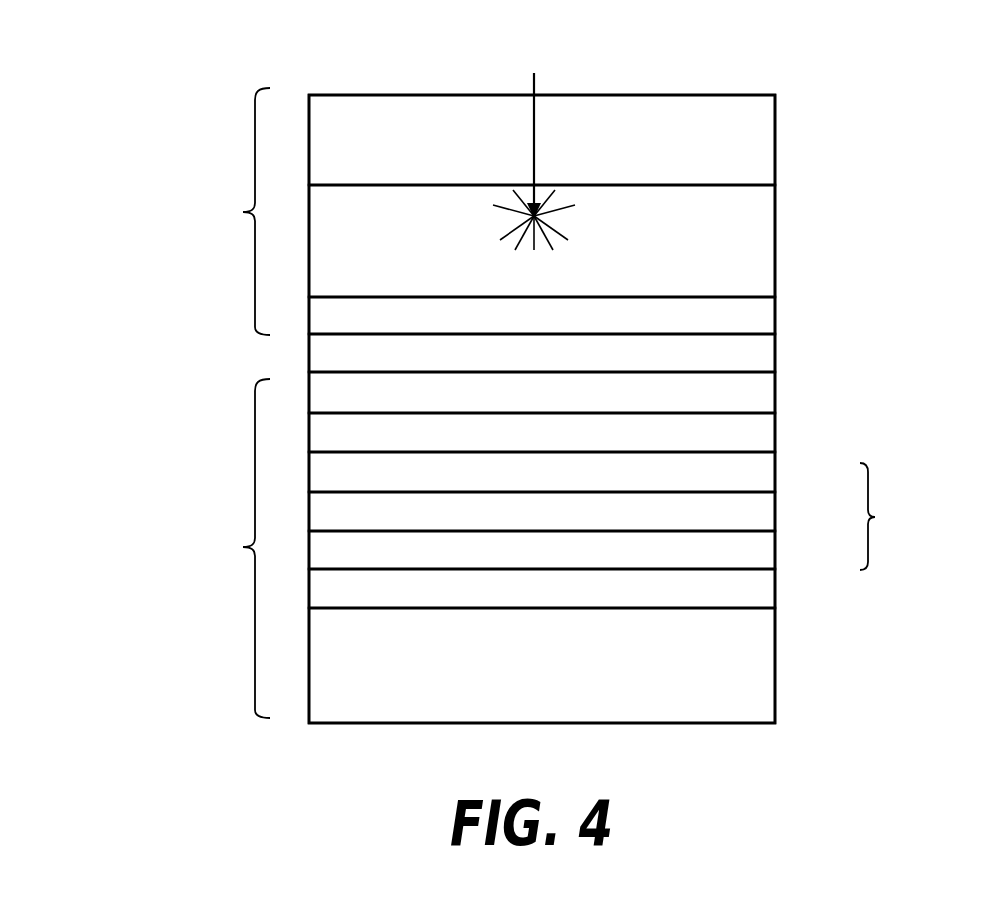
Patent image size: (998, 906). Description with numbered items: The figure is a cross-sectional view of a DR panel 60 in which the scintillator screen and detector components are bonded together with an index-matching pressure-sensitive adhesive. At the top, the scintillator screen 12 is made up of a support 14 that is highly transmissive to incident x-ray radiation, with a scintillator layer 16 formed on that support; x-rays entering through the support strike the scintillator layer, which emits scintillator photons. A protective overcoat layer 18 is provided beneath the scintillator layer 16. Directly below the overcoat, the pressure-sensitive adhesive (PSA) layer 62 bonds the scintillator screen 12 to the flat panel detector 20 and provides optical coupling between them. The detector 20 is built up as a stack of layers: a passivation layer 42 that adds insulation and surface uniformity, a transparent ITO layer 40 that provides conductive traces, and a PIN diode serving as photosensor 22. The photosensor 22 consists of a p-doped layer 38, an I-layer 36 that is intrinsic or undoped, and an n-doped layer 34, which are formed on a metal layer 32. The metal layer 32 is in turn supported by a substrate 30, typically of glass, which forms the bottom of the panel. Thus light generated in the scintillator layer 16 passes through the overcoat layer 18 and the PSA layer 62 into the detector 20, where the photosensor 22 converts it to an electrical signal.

The DR panel 60 is at (284, 46).
The scintillator screen 12 is at (243, 212).
The support 14 is at (775, 122).
The scintillator layer 16 is at (775, 253).
The protective overcoat layer 18 is at (775, 313).
The pressure-sensitive adhesive layer 62 is at (308, 353).
The detector 20 is at (243, 547).
The passivation layer 42 is at (775, 390).
The ITO layer 40 is at (775, 432).
The photosensor 22 is at (875, 517).
The p-doped layer 38 is at (775, 470).
The I-layer 36 is at (775, 510).
The n-doped layer 34 is at (775, 557).
The metal layer 32 is at (775, 592).
The substrate 30 is at (774, 682).